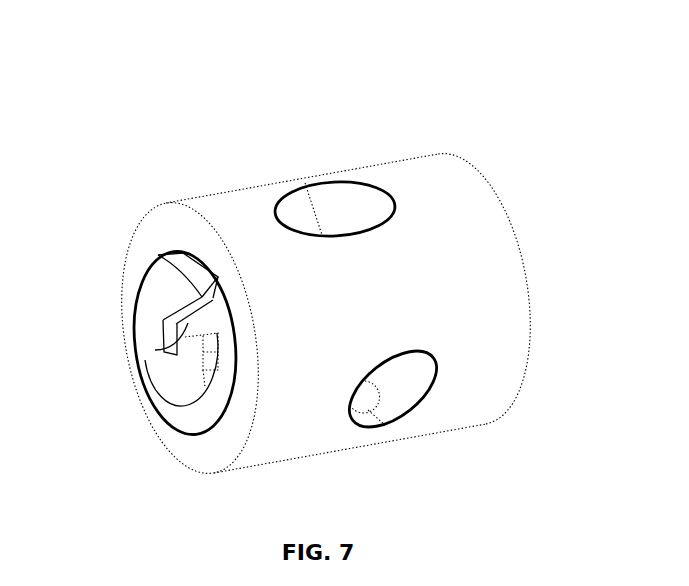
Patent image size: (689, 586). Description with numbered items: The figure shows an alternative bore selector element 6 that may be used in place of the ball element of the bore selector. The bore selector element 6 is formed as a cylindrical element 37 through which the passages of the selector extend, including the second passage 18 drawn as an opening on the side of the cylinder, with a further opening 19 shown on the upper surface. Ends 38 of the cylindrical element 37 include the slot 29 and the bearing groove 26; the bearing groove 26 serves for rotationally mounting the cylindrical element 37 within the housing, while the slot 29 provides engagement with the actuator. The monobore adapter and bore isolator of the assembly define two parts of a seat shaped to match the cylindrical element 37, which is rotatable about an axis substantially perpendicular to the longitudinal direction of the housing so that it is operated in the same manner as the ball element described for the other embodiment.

The bore selector element 6 is at (555, 93).
The second passage 18 is at (407, 383).
The upper port 19 is at (340, 203).
The bearing groove 26 is at (187, 417).
The slot 29 is at (172, 348).
The cylindrical element 37 is at (500, 303).
The ends 38 is at (160, 233).